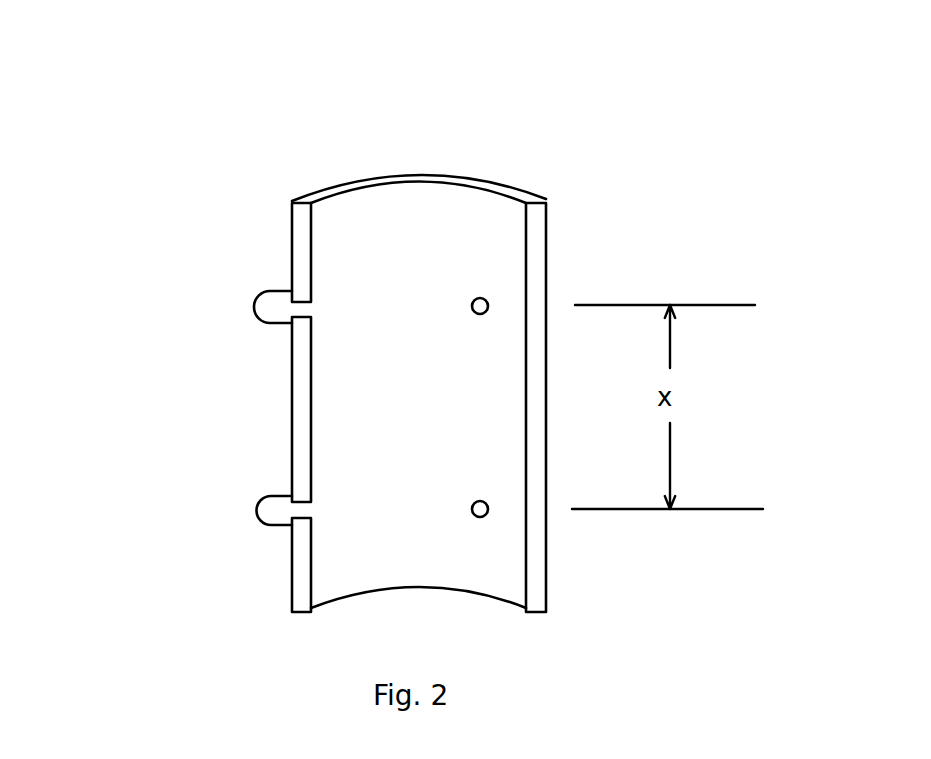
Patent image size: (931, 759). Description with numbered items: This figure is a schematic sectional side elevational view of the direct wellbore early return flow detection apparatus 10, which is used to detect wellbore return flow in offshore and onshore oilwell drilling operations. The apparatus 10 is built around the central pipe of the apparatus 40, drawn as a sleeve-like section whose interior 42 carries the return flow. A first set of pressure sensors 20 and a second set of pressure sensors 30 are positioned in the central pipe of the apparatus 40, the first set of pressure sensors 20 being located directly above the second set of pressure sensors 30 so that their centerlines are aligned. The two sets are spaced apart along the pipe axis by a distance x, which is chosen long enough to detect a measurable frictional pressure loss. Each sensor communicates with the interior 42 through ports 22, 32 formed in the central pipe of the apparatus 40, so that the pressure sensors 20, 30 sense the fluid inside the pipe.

The early return flow detection apparatus 10 is at (260, 149).
The first set of pressure sensors 20 is at (272, 303).
The port 22 is at (473, 300).
The second set of pressure sensors 30 is at (268, 509).
The port 32 is at (475, 504).
The central pipe of the apparatus 40 is at (550, 217).
The interior 42 is at (457, 223).